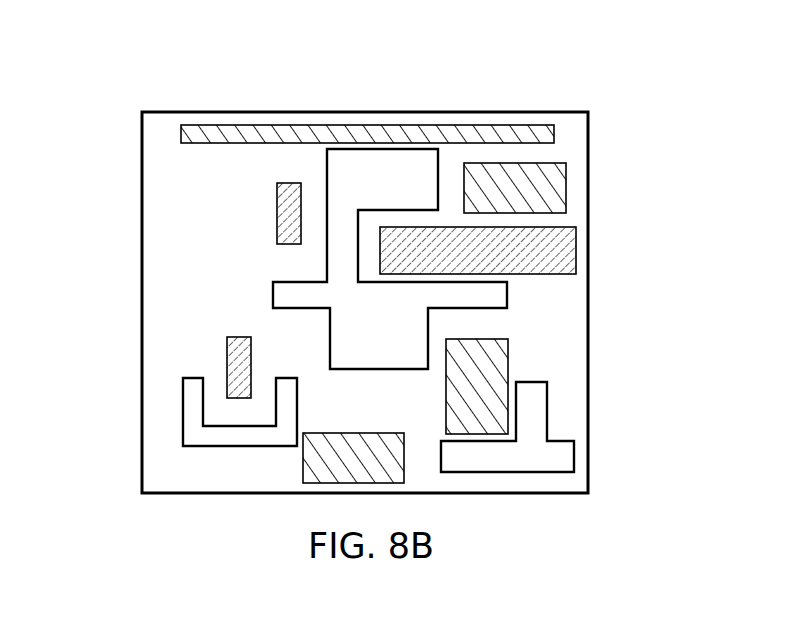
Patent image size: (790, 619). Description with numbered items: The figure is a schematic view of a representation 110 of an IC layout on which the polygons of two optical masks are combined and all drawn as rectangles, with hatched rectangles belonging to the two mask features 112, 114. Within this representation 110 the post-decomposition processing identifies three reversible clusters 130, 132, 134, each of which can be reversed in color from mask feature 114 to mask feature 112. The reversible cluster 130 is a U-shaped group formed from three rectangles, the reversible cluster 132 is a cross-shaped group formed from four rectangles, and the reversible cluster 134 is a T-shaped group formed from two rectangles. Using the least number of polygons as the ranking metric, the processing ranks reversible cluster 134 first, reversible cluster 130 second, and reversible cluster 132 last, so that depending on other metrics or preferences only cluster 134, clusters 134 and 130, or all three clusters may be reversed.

The representation 110 is at (503, 97).
The mask feature 112 is at (275, 217).
The mask feature 114 is at (180, 136).
The reversible cluster 130 is at (183, 416).
The reversible cluster 132 is at (509, 294).
The reversible cluster 134 is at (576, 453).